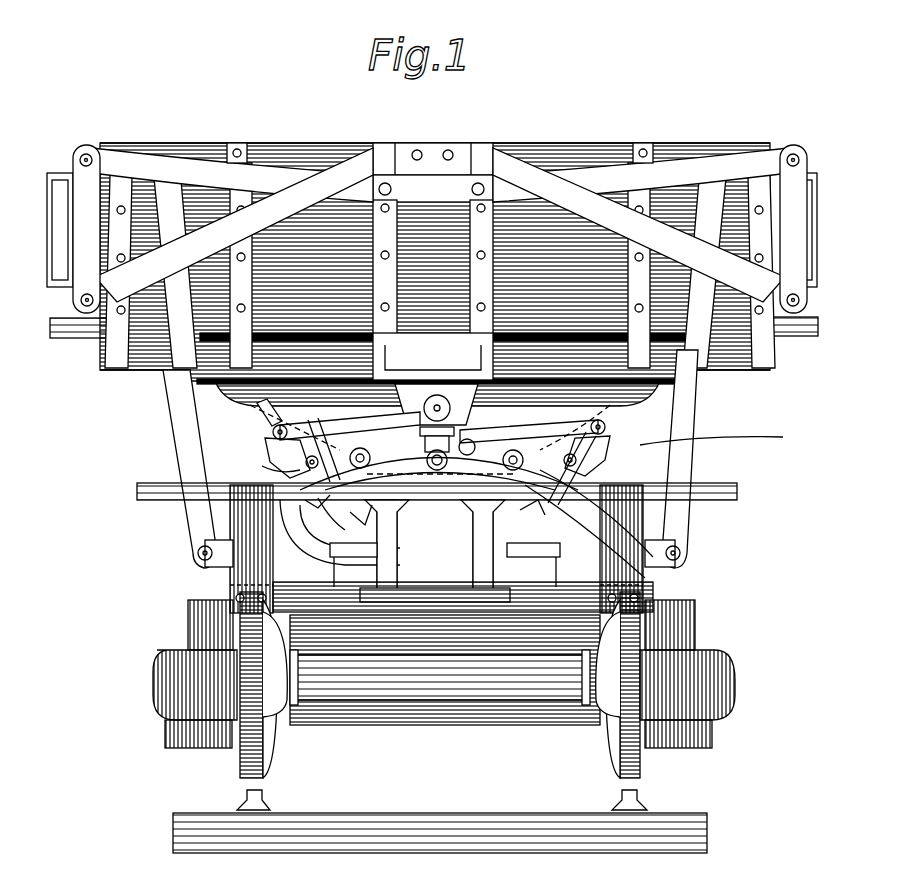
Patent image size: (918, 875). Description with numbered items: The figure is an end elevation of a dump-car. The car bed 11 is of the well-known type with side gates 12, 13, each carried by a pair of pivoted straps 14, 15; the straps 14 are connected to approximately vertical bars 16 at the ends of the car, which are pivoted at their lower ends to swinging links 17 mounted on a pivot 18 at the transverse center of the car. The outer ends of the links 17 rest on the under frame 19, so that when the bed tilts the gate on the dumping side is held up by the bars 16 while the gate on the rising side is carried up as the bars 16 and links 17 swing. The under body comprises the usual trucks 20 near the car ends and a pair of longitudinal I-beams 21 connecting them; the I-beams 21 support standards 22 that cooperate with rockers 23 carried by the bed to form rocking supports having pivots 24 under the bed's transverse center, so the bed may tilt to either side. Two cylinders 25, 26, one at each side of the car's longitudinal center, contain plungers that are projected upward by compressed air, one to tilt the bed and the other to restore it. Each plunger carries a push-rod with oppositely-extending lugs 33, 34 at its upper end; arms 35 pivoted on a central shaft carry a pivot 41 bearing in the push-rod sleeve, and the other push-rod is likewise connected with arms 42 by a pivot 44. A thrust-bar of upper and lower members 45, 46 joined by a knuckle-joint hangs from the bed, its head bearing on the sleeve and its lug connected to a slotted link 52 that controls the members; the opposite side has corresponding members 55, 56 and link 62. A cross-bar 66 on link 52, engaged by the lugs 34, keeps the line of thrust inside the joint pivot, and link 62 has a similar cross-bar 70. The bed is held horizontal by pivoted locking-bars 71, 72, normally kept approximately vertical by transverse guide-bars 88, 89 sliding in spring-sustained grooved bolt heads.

The car bed 11 is at (566, 150).
The side gate 12 is at (84, 152).
The side gate 13 is at (772, 146).
The pivoted strap 14 is at (208, 163).
The pivoted strap 15 is at (440, 225).
The bar 16 is at (185, 450).
The swinging link 17 is at (686, 573).
The pivot 18 is at (437, 470).
The under frame 19 is at (655, 586).
The truck 20 is at (163, 707).
The I-beam 21 is at (473, 558).
The standard 22 is at (452, 438).
The rocker 23 is at (432, 386).
The pivot 24 is at (422, 420).
The cylinder 25 is at (325, 655).
The cylinder 26 is at (567, 592).
The lug 33 is at (230, 537).
The lug 34 is at (347, 550).
The arm 35 is at (353, 512).
The pivot 41 is at (318, 514).
The arm 42 is at (721, 435).
The pivot 44 is at (640, 478).
The upper member of thrust-bar 45 is at (262, 414).
The lower member of thrust-bar 46 is at (273, 468).
The link 52 is at (334, 470).
The upper member of thrust-bar 55 is at (640, 412).
The lower member of thrust-bar 56 is at (640, 458).
The link 62 is at (575, 455).
The cross-bar 66 is at (320, 498).
The cross-bar 70 is at (540, 503).
The locking-bar 71 is at (263, 448).
The locking-bar 72 is at (613, 442).
The guide-bar 88 is at (322, 434).
The guide-bar 89 is at (552, 436).